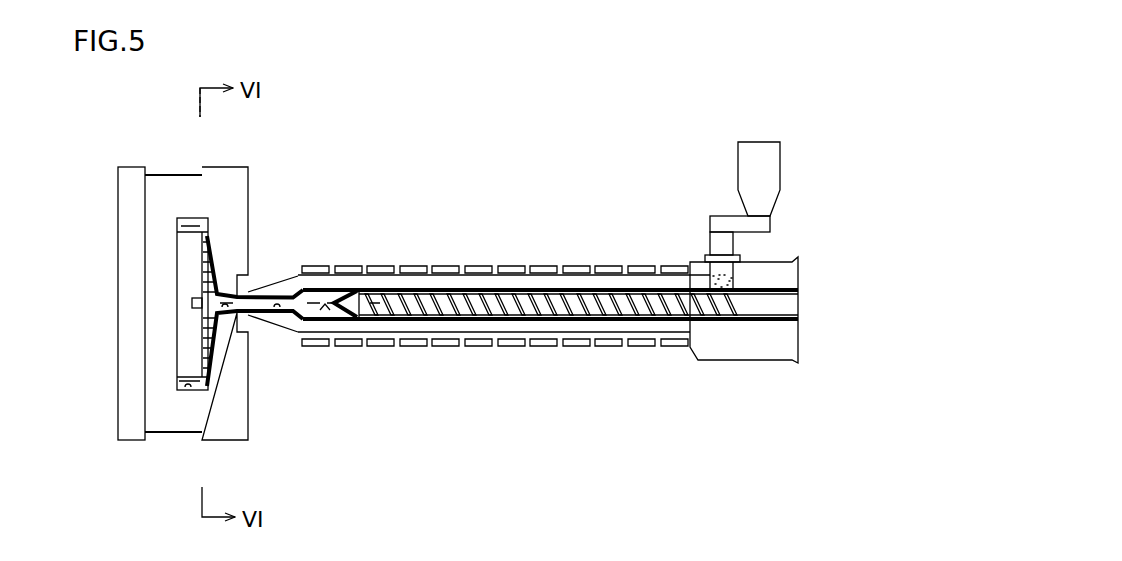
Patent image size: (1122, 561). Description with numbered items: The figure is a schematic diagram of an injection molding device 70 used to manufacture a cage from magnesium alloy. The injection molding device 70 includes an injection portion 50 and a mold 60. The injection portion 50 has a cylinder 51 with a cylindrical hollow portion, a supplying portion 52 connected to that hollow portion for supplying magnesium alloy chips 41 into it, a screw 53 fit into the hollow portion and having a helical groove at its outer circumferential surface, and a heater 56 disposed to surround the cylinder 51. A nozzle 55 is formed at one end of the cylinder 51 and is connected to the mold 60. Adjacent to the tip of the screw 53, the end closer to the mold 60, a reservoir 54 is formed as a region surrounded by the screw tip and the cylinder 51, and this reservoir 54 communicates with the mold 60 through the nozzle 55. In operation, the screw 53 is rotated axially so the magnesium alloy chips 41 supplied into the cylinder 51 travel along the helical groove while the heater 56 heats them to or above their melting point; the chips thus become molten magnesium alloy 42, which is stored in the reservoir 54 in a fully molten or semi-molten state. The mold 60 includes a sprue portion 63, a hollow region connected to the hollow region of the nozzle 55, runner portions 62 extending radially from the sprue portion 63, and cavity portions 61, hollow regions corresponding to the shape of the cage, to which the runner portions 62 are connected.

The injection molding device 70 is at (829, 111).
The injection portion 50 is at (495, 138).
The cylinder 51 is at (517, 282).
The supplying portion 52 is at (766, 131).
The screw 53 is at (543, 307).
The reservoir 54 is at (327, 311).
The nozzle 55 is at (280, 309).
The heater 56 is at (383, 266).
The magnesium alloy chips 41 is at (712, 285).
The molten magnesium alloy 42 is at (185, 218).
The mold 60 is at (132, 160).
The cavity portion 61 is at (188, 388).
The runner portion 62 is at (212, 266).
The sprue portion 63 is at (217, 316).